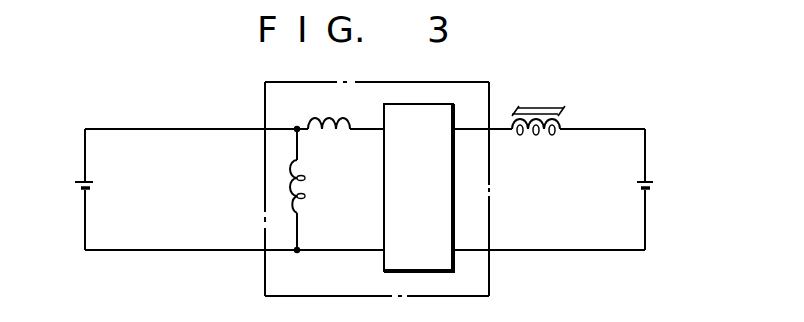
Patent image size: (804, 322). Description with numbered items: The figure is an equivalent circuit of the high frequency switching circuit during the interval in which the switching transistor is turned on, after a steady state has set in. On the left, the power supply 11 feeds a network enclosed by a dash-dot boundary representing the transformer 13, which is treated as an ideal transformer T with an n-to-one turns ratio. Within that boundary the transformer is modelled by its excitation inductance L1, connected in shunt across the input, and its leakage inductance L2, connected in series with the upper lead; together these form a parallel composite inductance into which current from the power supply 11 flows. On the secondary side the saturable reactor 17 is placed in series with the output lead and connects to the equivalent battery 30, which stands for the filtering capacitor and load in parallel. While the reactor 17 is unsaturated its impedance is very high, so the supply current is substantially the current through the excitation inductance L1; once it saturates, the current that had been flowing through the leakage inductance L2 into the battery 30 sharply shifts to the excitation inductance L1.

The power supply 11 is at (96, 187).
The transformer 13 is at (265, 91).
The saturable reactor 17 is at (539, 105).
The equivalent battery 30 is at (653, 186).
The excitation inductance L1 is at (305, 194).
The leakage inductance L2 is at (335, 131).
The transformer n:1 T is at (455, 215).